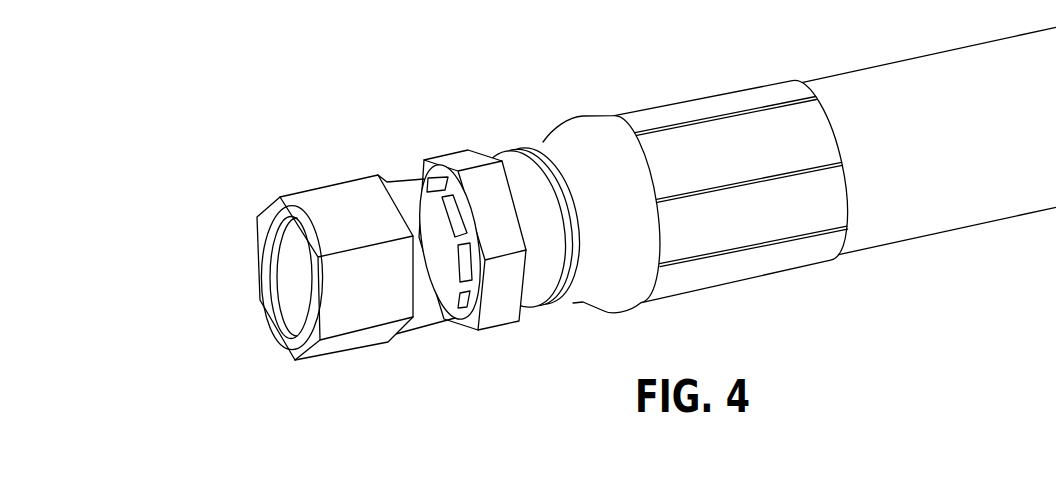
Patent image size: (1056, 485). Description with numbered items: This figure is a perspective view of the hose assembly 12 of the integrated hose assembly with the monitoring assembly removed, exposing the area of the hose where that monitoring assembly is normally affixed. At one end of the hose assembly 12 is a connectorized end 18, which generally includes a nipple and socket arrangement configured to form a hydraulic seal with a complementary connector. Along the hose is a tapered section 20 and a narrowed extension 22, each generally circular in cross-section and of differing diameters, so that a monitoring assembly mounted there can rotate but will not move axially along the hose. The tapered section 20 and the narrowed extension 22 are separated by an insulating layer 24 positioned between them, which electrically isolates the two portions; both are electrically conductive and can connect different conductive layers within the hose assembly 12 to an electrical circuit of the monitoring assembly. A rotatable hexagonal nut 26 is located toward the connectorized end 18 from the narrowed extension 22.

The hose assembly 12 is at (926, 307).
The connectorized end 18 is at (258, 163).
The tapered section 20 is at (567, 133).
The narrowed extension 22 is at (508, 158).
The insulating layer 24 is at (527, 150).
The rotatable hexagonal nut 26 is at (448, 157).